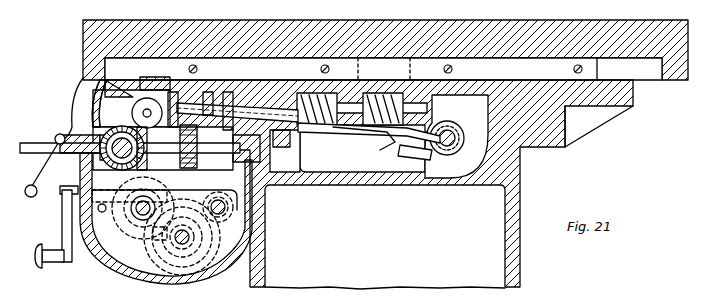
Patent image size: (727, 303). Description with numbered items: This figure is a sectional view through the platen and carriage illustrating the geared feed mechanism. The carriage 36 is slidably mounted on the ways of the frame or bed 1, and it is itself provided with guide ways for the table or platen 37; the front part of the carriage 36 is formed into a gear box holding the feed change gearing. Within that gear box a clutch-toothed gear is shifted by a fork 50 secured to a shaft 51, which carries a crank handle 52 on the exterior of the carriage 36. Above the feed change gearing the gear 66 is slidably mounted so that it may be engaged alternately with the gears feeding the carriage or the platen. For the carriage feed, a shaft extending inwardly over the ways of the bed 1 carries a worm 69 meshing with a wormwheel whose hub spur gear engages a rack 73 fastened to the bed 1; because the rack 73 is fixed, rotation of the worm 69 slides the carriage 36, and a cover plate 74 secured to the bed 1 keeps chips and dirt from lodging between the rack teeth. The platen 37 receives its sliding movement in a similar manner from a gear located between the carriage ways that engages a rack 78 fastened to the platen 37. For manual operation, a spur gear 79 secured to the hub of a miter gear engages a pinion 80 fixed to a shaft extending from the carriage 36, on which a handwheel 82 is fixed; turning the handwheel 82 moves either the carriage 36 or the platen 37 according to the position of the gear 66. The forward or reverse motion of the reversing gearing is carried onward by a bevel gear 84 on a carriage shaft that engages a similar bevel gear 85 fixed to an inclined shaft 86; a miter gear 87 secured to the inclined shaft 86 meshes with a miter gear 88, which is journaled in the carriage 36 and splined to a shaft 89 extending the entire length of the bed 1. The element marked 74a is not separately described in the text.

The frame or bed 1 is at (265, 258).
The carriage 36 is at (210, 274).
The table or platen 37 is at (673, 81).
The fork 50 is at (158, 228).
The shaft 51 is at (110, 197).
The crank handle 52 is at (67, 263).
The gear 66 is at (189, 169).
The worm 69 is at (308, 93).
The rack 73 is at (298, 157).
The cover plate 74 is at (300, 133).
The lever arm 74a is at (372, 138).
The rack 78 is at (570, 74).
The spur gear 79 is at (99, 120).
The pinion 80 is at (133, 106).
The handwheel 82 is at (83, 86).
The bevel gear 84 is at (228, 162).
The bevel gear 85 is at (383, 69).
The inclined shaft 86 is at (410, 148).
The miter gear 87 is at (444, 158).
The miter gear 88 is at (455, 126).
The shaft 89 is at (462, 160).